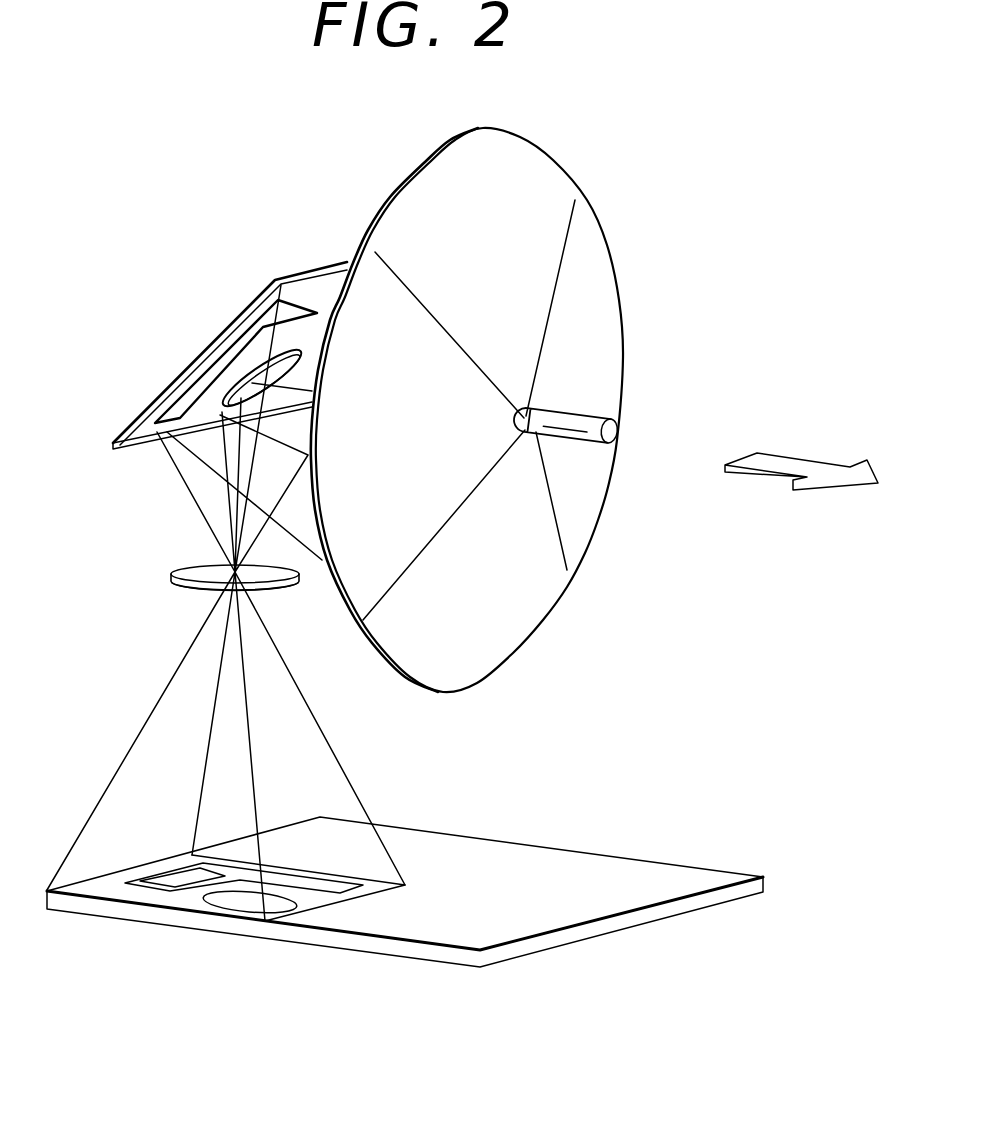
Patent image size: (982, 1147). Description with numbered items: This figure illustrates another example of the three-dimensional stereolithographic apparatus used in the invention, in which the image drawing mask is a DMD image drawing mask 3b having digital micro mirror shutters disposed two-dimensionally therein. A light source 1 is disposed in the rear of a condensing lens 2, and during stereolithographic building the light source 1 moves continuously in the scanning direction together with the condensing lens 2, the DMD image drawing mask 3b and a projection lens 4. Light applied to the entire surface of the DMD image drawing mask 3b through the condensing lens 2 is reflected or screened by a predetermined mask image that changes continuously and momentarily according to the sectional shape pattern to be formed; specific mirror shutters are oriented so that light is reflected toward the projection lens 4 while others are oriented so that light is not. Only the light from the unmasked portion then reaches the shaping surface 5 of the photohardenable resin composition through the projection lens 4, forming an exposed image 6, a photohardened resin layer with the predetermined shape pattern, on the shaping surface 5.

The light source 1 is at (586, 414).
The condensing lens 2 is at (543, 155).
The DMD image drawing mask 3b is at (208, 345).
The projection lens 4 is at (190, 578).
The shaping surface 5 is at (462, 850).
The exposed image 6 is at (118, 893).